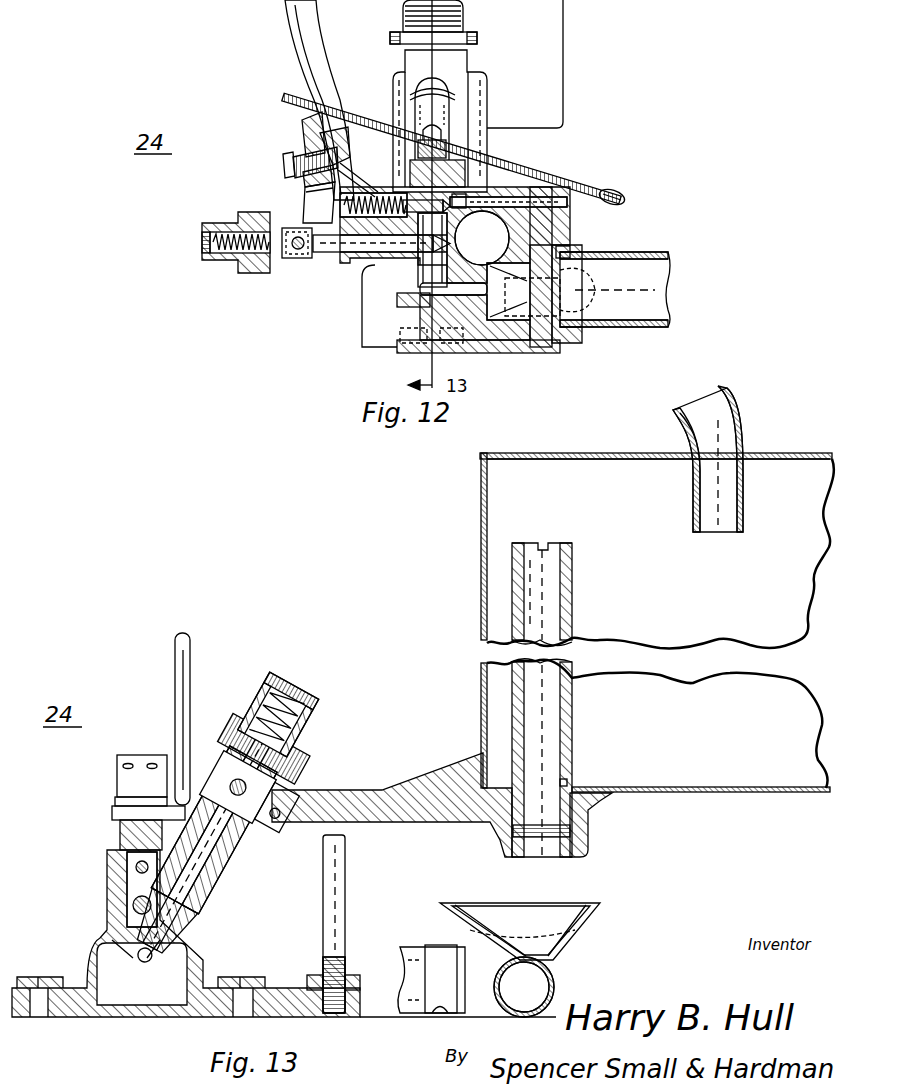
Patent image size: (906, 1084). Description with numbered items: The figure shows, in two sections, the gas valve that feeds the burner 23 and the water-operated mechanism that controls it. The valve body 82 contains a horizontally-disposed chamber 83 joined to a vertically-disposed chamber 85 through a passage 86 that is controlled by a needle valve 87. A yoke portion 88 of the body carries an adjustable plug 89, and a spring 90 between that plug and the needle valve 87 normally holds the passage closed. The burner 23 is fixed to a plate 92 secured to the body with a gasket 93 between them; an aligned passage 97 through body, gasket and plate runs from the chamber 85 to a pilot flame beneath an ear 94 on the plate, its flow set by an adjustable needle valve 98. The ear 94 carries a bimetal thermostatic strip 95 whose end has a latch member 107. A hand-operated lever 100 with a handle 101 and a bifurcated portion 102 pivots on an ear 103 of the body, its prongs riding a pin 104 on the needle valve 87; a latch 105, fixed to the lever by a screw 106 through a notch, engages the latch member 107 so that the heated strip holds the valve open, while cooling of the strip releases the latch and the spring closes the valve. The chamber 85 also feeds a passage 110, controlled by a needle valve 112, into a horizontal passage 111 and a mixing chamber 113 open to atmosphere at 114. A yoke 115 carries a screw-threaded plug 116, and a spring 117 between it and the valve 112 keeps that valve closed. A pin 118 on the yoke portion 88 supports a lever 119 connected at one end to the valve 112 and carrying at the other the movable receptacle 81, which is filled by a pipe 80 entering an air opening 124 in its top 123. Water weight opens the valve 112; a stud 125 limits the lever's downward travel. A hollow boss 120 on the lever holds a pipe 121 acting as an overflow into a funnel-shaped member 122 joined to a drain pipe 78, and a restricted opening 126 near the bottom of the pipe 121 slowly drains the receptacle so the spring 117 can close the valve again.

In FIG. 12, the burner 23 is at (668, 254).
In FIG. 13, the drain pipe 78 is at (555, 986).
In FIG. 13, the pipe 80 is at (726, 402).
In FIG. 12, the movable receptacle 81 is at (563, 30).
In FIG. 13, the movable receptacle 81 is at (481, 495).
In FIG. 12, the valve body 82 is at (530, 236).
In FIG. 13, the valve body 82 is at (232, 904).
In FIG. 12, the horizontally-disposed chamber 83 is at (548, 251).
In FIG. 12, the vertically-disposed chamber 85 is at (420, 262).
In FIG. 13, the vertically-disposed chamber 85 is at (136, 883).
In FIG. 12, the passage 86 is at (497, 252).
In FIG. 12, the needle valve 87 is at (347, 262).
In FIG. 13, the needle valve 87 is at (133, 906).
In FIG. 12, the yoke portion 88 is at (278, 266).
In FIG. 12, the adjustable plug 89 is at (212, 248).
In FIG. 12, the spring 90 is at (224, 249).
In FIG. 12, the plate 92 is at (576, 340).
In FIG. 12, the gasket 93 is at (545, 350).
In FIG. 12, the ear 94 is at (626, 200).
In FIG. 12, the bimetal thermostatic strip 95 is at (352, 118).
In FIG. 13, the bimetal thermostatic strip 95 is at (117, 801).
In FIG. 12, the passage 97 is at (512, 197).
In FIG. 12, the adjustable needle valve 98 is at (468, 196).
In FIG. 13, the adjustable needle valve 98 is at (136, 866).
In FIG. 12, the hand-operated lever 100 is at (294, 160).
In FIG. 12, the handle 101 is at (289, 16).
In FIG. 13, the handle 101 is at (175, 660).
In FIG. 12, the bifurcated portion 102 is at (304, 192).
In FIG. 12, the ear 103 is at (340, 168).
In FIG. 12, the pin 104 is at (298, 252).
In FIG. 12, the latch 105 is at (303, 134).
In FIG. 12, the screw 106 is at (284, 163).
In FIG. 12, the latch member 107 is at (284, 100).
In FIG. 12, the passage 110 is at (410, 291).
In FIG. 13, the passage 110 is at (140, 940).
In FIG. 12, the horizontal passage 111 is at (463, 296).
In FIG. 13, the horizontal passage 111 is at (139, 964).
In FIG. 12, the needle valve 112 is at (437, 134).
In FIG. 13, the needle valve 112 is at (180, 920).
In FIG. 12, the mixing chamber 113 is at (488, 336).
In FIG. 12, the atmosphere opening 114 is at (375, 334).
In FIG. 13, the yoke 115 is at (313, 754).
In FIG. 12, the screw-threaded plug 116 is at (460, 12).
In FIG. 13, the screw-threaded plug 116 is at (276, 672).
In FIG. 13, the spring 117 is at (266, 708).
In FIG. 13, the pin 118 is at (294, 798).
In FIG. 12, the lever 119 is at (487, 92).
In FIG. 13, the lever 119 is at (412, 785).
In FIG. 13, the hollow boss 120 is at (586, 847).
In FIG. 13, the pipe 121 is at (572, 586).
In FIG. 13, the funnel-shaped member 122 is at (592, 912).
In FIG. 13, the top 123 is at (782, 454).
In FIG. 13, the air opening 124 is at (646, 455).
In FIG. 13, the stud 125 is at (345, 886).
In FIG. 13, the restricted opening 126 is at (570, 784).